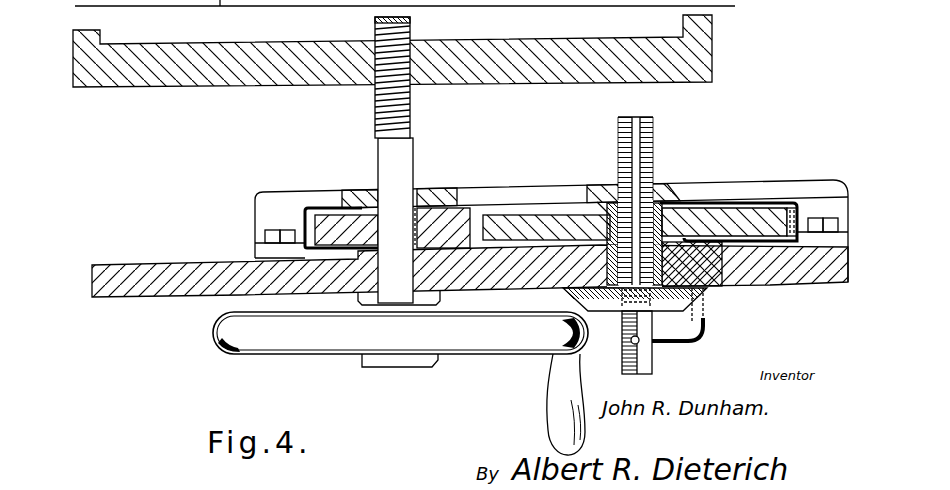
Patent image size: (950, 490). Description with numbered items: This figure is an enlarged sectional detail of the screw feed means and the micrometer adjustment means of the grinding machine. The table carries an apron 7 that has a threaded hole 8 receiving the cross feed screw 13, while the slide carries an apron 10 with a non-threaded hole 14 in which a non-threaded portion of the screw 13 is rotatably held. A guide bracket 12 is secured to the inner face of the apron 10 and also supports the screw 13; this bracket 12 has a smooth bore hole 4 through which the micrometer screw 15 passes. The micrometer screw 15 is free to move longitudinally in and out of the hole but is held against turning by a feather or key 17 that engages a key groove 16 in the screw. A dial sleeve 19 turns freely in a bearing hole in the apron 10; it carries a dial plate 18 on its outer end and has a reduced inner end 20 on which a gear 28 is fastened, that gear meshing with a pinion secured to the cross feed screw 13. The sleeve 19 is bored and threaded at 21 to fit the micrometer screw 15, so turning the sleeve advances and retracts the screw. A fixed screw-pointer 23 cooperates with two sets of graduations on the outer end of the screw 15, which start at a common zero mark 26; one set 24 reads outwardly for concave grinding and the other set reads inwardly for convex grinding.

The smooth bore hole 4 is at (610, 188).
The apron 7 is at (538, 70).
The threaded hole 8 is at (370, 72).
The apron 10 is at (170, 285).
The guide bracket 12 is at (545, 188).
The cross feed screw 13 is at (378, 158).
The non-threaded hole 14 is at (375, 275).
The micrometer screw 15 is at (650, 122).
The key groove 16 is at (617, 125).
The key 17 is at (650, 185).
The dial plate 18 is at (700, 310).
The dial sleeve 19 is at (683, 290).
The reduced inner end 20 is at (668, 190).
The threaded bore 21 is at (332, 222).
The screw-pointer 23 is at (677, 347).
The set of graduations 24 is at (628, 375).
The zero mark 26 is at (620, 345).
The gear 28 is at (752, 208).